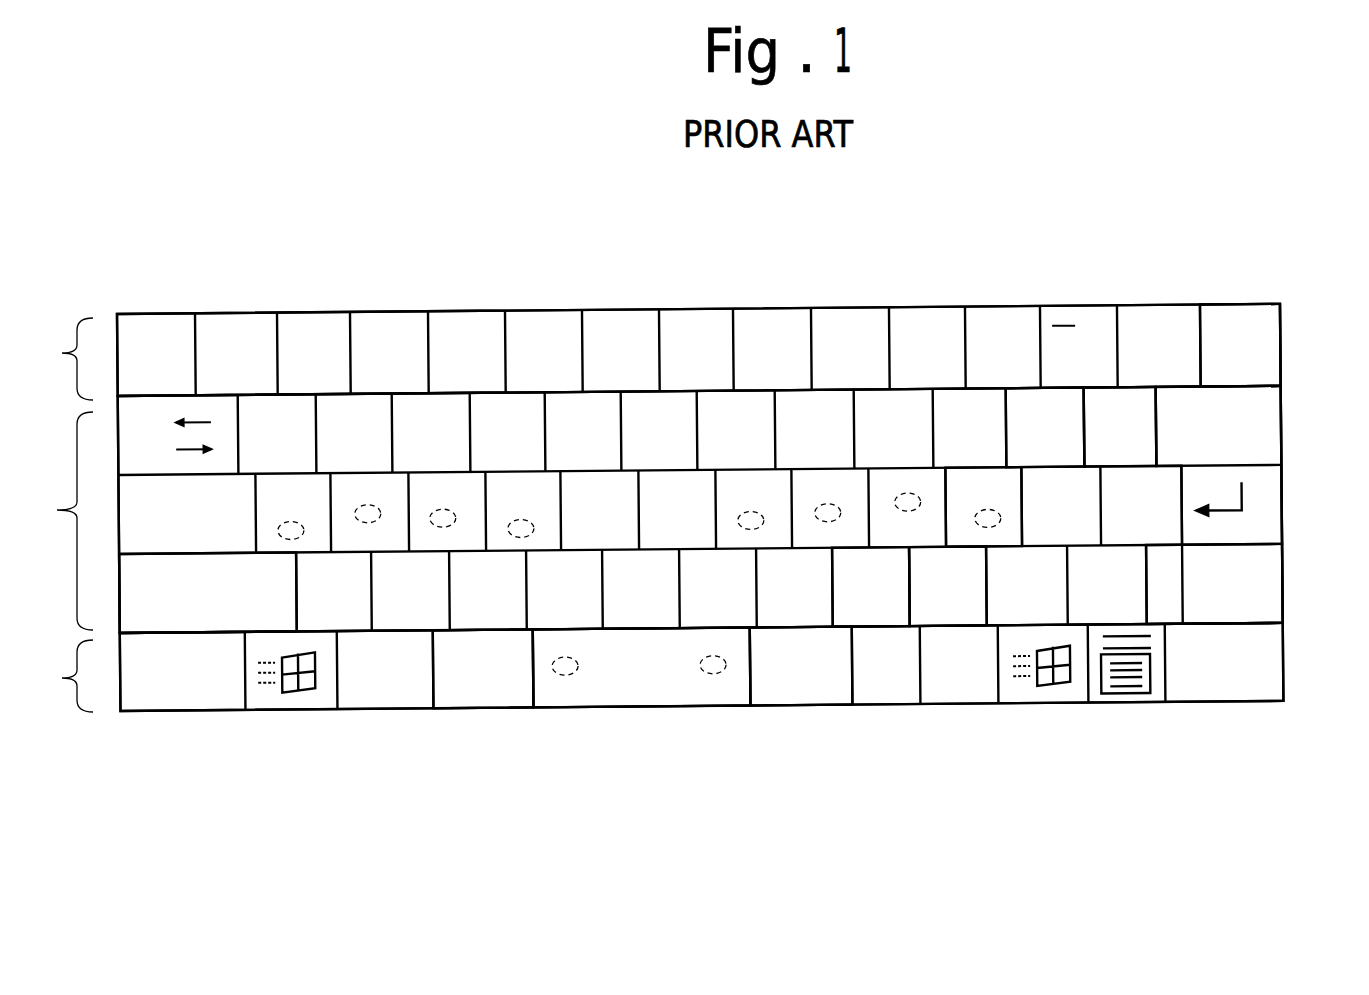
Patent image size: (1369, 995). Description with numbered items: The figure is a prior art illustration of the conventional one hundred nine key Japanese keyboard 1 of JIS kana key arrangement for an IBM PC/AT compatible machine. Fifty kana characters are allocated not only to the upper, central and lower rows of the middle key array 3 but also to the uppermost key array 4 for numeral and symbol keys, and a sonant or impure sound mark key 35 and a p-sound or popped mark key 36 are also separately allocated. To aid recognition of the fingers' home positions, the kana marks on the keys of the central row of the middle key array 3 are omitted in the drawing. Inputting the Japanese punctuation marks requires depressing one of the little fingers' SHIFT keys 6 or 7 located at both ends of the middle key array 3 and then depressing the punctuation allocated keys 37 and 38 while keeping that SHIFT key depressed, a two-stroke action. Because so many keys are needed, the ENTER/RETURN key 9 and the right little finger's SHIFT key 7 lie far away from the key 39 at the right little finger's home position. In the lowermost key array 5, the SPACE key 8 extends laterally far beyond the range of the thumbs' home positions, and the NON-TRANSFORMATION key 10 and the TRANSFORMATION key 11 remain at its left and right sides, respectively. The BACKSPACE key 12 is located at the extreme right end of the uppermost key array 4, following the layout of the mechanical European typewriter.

The 109 Japanese keyboard 1 is at (683, 270).
The middle key array 3 is at (658, 509).
The uppermost key array 4 is at (659, 352).
The lowermost key array 5 is at (663, 667).
The left little finger's SHIFT key 6 is at (167, 618).
The right little finger's SHIFT key 7 is at (1237, 563).
The SPACE key 8 is at (665, 693).
The ENTER/RETURN key 9 is at (1240, 463).
The NON-TRANSFORMATION key 10 is at (453, 690).
The TRANSFORMATION key 11 is at (758, 688).
The BACKSPACE (BS) key 12 is at (1266, 338).
The sonant or impure sound mark key 35 is at (1042, 403).
The p-sound or popped mark key 36 is at (1113, 405).
The punctuation allocated key 37 is at (925, 617).
The punctuation allocated key 38 is at (843, 613).
The right little finger's home position key 39 is at (977, 483).